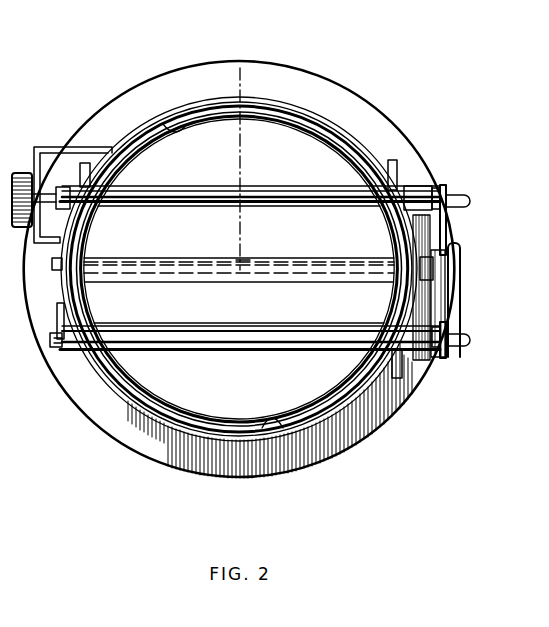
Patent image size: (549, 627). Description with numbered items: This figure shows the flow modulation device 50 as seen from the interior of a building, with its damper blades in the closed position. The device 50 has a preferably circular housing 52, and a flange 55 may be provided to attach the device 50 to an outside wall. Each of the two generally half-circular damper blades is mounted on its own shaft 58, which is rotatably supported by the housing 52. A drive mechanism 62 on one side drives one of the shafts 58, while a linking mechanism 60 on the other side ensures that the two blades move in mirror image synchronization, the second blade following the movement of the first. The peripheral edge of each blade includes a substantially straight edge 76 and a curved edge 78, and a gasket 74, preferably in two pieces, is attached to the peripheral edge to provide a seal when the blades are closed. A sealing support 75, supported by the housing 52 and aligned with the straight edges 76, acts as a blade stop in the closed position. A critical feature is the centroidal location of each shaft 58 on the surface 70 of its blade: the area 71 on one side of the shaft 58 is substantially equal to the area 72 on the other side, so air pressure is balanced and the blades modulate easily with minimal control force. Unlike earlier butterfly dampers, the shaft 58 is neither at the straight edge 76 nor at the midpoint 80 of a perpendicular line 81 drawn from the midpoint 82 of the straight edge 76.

The flow modulation device 50 is at (344, 52).
The housing 52 is at (180, 426).
The flange 55 is at (199, 72).
The shaft 58 is at (330, 197).
The linking mechanism 60 is at (462, 307).
The drive mechanism 62 is at (18, 172).
The surface 70 is at (189, 238).
The area 71 is at (360, 238).
The area 72 is at (167, 168).
The gasket 74 is at (62, 288).
The sealing support 75 is at (322, 264).
The straight edge 76 is at (151, 257).
The curved edge 78 is at (183, 104).
The midpoint 80 is at (248, 167).
The perpendicular line 81 is at (246, 120).
The midpoint 82 is at (242, 262).